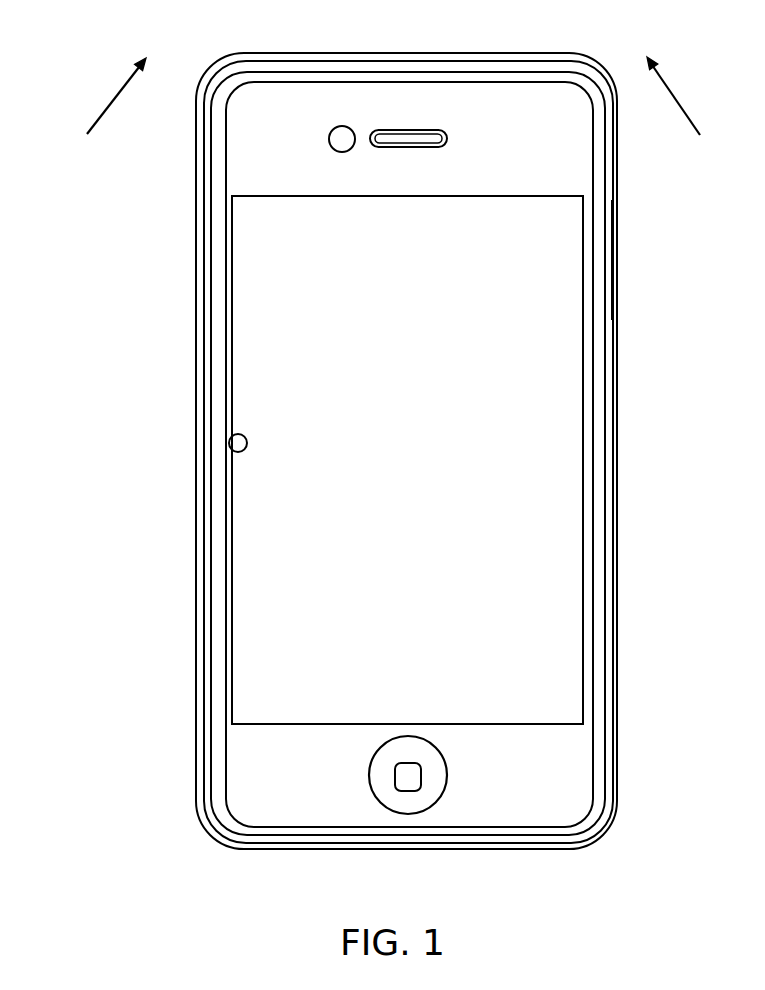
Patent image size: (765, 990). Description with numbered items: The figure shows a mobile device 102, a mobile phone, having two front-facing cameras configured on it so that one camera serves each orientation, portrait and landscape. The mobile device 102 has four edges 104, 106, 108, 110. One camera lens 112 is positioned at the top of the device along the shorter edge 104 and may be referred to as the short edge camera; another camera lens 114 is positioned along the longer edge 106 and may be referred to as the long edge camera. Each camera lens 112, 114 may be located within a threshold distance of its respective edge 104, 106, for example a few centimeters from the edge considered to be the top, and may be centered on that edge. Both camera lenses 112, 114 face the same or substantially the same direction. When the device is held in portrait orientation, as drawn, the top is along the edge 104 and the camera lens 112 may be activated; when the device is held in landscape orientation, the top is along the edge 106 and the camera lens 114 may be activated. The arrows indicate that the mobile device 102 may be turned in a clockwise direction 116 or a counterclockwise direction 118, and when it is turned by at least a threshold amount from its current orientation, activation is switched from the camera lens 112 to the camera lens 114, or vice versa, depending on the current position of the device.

The mobile device 102 is at (190, 42).
The edge 104 is at (444, 77).
The edge 106 is at (208, 540).
The edge 108 is at (482, 841).
The edge 110 is at (608, 262).
The camera lens 112 is at (346, 139).
The camera lens 114 is at (247, 442).
The clockwise direction 116 is at (103, 108).
The counterclockwise direction 118 is at (687, 120).